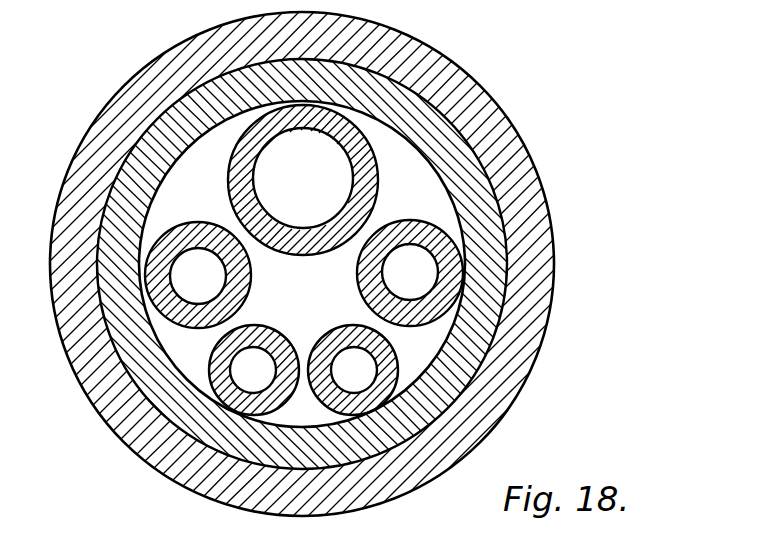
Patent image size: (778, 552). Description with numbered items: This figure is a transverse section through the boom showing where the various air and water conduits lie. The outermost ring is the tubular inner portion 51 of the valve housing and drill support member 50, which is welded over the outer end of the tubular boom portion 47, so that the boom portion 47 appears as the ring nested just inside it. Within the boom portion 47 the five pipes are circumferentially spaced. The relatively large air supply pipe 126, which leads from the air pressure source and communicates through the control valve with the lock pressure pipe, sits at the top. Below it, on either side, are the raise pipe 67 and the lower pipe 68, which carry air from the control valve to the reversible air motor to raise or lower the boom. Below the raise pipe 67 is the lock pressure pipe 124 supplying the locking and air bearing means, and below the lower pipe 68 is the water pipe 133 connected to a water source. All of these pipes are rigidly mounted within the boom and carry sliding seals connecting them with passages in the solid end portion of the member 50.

The valve housing and drill support member 50 is at (332, 264).
The tubular inner portion 51 is at (130, 433).
The tubular boom portion 47 is at (160, 140).
The air supply pipe 126 is at (367, 184).
The raise pipe 67 is at (189, 226).
The lower pipe 68 is at (365, 282).
The lock pressure pipe 124 is at (283, 337).
The water pipe 133 is at (383, 350).